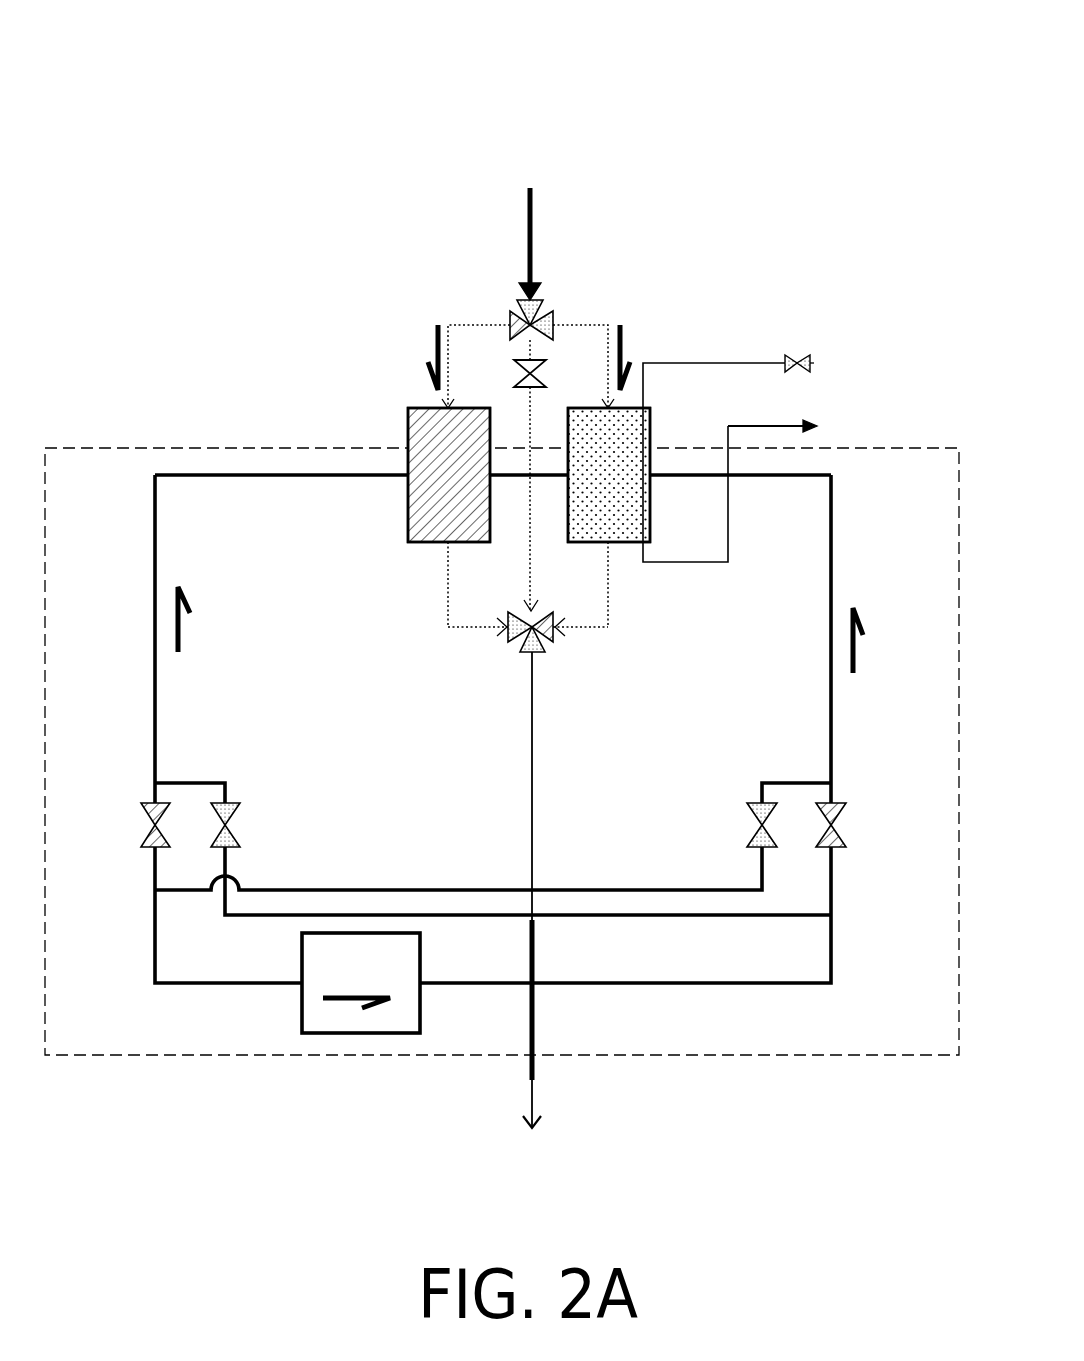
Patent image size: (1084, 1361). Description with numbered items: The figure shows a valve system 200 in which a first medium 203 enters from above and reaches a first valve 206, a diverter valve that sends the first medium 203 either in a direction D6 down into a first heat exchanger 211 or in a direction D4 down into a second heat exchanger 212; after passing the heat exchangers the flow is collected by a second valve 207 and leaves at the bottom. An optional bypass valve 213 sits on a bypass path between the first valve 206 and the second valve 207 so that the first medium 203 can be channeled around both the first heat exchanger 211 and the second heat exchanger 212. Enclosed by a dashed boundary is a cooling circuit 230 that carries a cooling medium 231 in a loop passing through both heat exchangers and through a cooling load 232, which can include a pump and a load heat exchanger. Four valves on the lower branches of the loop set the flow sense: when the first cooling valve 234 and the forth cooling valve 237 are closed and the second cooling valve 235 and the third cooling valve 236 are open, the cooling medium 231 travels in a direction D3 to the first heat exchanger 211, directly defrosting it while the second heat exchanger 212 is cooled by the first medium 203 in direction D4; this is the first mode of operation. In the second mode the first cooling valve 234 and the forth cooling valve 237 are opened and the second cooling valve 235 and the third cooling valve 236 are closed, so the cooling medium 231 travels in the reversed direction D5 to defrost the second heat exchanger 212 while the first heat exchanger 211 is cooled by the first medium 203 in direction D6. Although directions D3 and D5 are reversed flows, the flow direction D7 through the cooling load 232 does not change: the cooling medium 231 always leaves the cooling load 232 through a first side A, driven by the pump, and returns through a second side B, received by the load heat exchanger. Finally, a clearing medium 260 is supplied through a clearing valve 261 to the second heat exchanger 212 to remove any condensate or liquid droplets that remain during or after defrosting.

The valve system 200 is at (731, 100).
The first medium 203 is at (527, 225).
The first valve 206 is at (500, 297).
The second valve 207 is at (497, 665).
The first heat exchanger 211 is at (412, 410).
The second heat exchanger 212 is at (652, 425).
The bypass valve 213 is at (527, 360).
The cooling circuit 230 is at (205, 447).
The cooling medium 231 is at (268, 476).
The cooling load 232 is at (361, 983).
The first cooling valve 234 is at (148, 806).
The second cooling valve 235 is at (236, 813).
The third cooling valve 236 is at (750, 810).
The forth cooling valve 237 is at (836, 813).
The clearing medium 260 is at (708, 362).
The clearing valve 261 is at (803, 358).
The direction D3 is at (180, 637).
The direction D4 is at (627, 343).
The direction D5 is at (856, 657).
The direction D6 is at (432, 345).
The flow direction D7 is at (340, 1003).
The first side A is at (422, 981).
The second side B is at (302, 983).